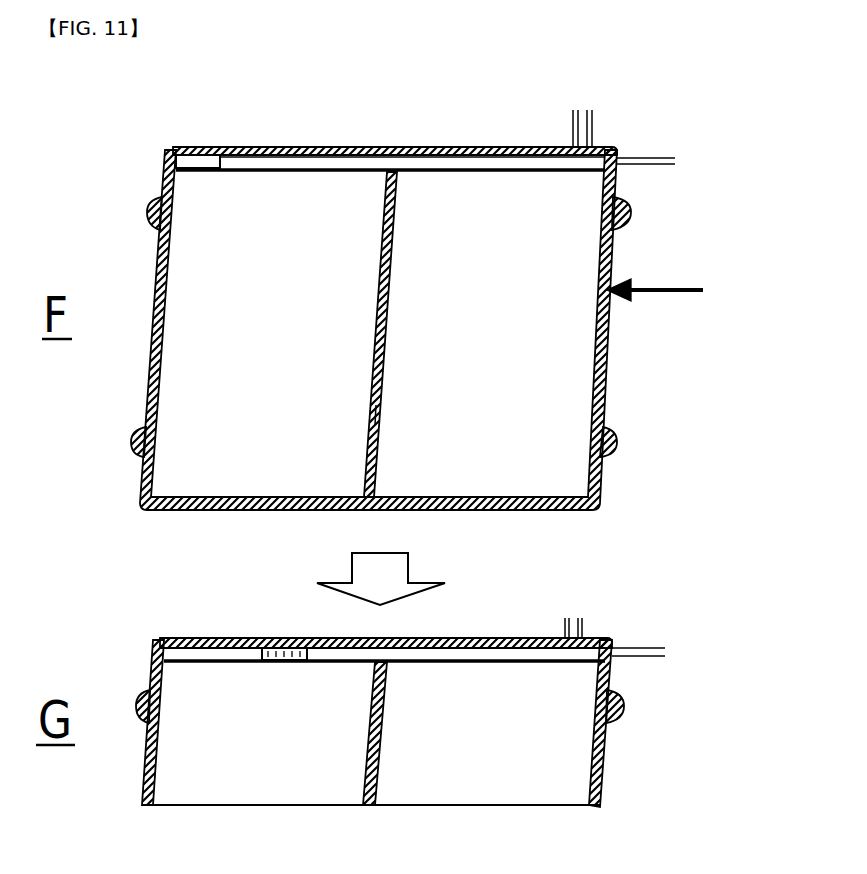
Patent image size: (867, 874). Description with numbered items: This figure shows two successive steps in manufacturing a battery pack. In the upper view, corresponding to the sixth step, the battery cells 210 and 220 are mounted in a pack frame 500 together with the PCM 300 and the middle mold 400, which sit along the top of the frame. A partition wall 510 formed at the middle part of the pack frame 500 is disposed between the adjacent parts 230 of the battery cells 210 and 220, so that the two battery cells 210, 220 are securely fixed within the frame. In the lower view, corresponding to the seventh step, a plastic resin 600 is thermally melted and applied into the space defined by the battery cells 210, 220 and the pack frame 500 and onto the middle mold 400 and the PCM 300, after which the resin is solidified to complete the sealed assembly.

The battery cell 210 is at (484, 473).
The battery cell 220 is at (236, 473).
The adjacent parts of the battery cells 230 is at (374, 350).
The PCM 300 is at (318, 147).
The middle mold 400 is at (203, 147).
The pack frame 500 is at (610, 361).
The partition wall 510 is at (378, 415).
The plastic resin 600 is at (165, 652).